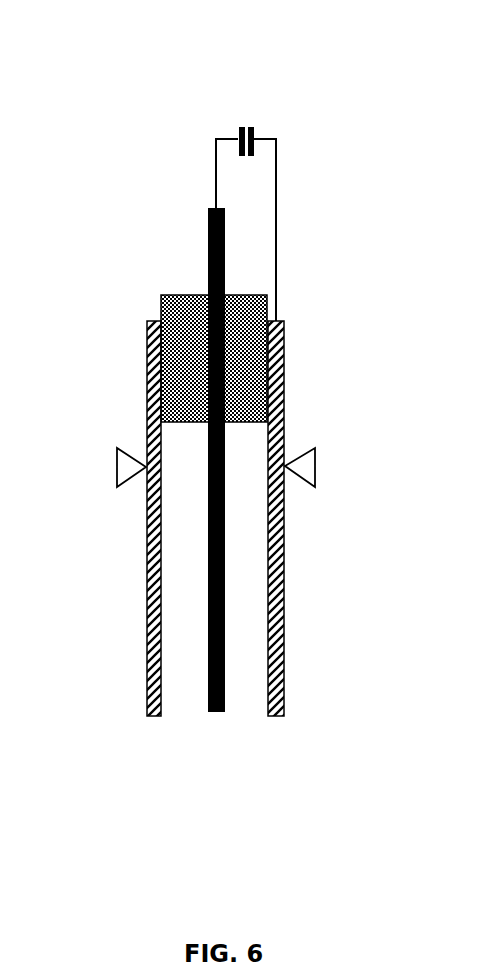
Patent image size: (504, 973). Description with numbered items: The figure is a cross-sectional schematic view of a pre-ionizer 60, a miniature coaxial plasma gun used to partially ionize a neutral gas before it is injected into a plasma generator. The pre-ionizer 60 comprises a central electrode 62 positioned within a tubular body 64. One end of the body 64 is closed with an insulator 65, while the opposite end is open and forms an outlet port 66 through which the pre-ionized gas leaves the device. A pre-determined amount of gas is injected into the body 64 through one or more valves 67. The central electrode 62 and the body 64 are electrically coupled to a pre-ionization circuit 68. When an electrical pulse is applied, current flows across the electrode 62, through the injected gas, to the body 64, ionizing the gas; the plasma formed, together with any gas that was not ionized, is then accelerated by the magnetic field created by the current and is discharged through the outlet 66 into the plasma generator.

The pre-ionizer 60 is at (362, 74).
The central electrode 62 is at (235, 658).
The tubular body 64 is at (295, 517).
The insulator 65 is at (258, 316).
The outlet port 66 is at (168, 682).
The valves 67 is at (104, 466).
The pre-ionization circuit 68 is at (189, 168).